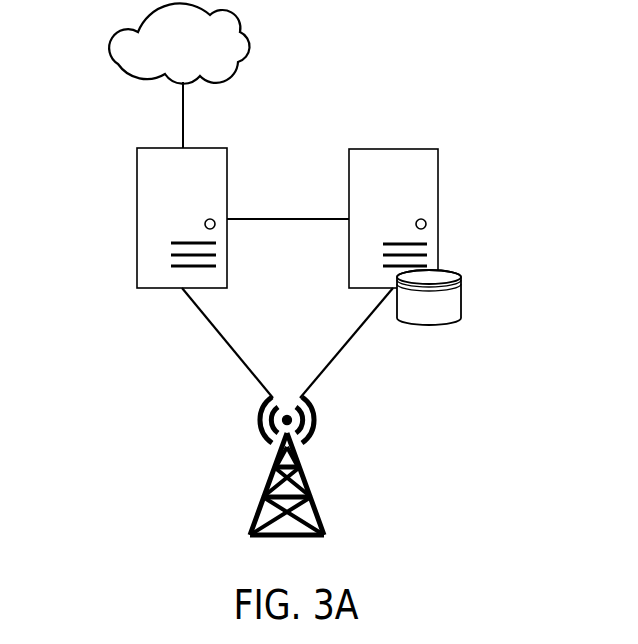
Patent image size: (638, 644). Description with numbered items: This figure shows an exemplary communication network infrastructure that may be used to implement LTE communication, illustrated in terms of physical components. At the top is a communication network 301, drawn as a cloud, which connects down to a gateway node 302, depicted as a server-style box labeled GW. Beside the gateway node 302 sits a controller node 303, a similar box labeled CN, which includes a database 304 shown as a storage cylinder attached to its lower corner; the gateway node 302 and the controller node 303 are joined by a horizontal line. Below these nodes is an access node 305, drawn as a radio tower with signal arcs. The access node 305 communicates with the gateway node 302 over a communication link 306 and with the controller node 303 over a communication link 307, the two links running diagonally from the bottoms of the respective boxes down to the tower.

The communication network 301 is at (252, 44).
The gateway node 302 is at (137, 159).
The controller node 303 is at (438, 158).
The database 304 is at (461, 290).
The access node 305 is at (278, 462).
The communication link 306 is at (192, 305).
The communication link 307 is at (357, 335).